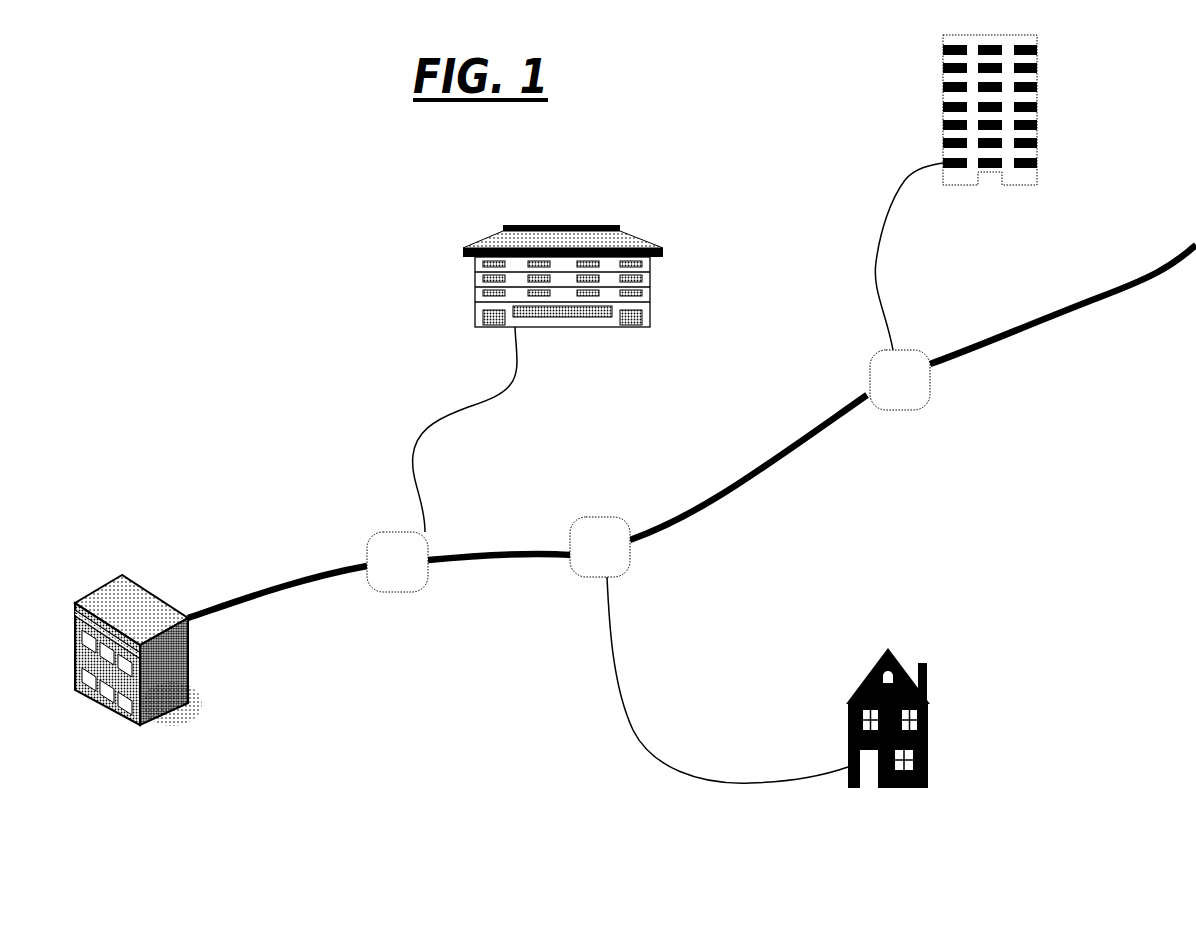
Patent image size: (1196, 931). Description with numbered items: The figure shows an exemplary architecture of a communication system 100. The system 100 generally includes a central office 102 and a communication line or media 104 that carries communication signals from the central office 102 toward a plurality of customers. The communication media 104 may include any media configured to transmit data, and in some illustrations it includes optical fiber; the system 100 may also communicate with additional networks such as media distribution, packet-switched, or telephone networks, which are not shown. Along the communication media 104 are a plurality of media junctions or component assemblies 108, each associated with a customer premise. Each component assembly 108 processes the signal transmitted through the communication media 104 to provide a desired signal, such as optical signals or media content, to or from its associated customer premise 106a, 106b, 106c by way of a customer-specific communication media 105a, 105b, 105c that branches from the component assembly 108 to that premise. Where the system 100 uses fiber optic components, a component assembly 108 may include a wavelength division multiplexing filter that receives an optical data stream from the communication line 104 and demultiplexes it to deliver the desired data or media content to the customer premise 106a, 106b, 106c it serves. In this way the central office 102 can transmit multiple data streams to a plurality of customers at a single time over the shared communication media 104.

The communication system 100 is at (270, 232).
The central office 102 is at (138, 667).
The communication media 104 is at (298, 578).
The customer-specific communication media 105a is at (436, 418).
The customer-specific communication media 105b is at (634, 732).
The customer-specific communication media 105c is at (870, 272).
The customer premise 106a is at (563, 294).
The customer premise 106b is at (888, 740).
The customer premise 106c is at (990, 130).
The component assembly 108 is at (430, 539).